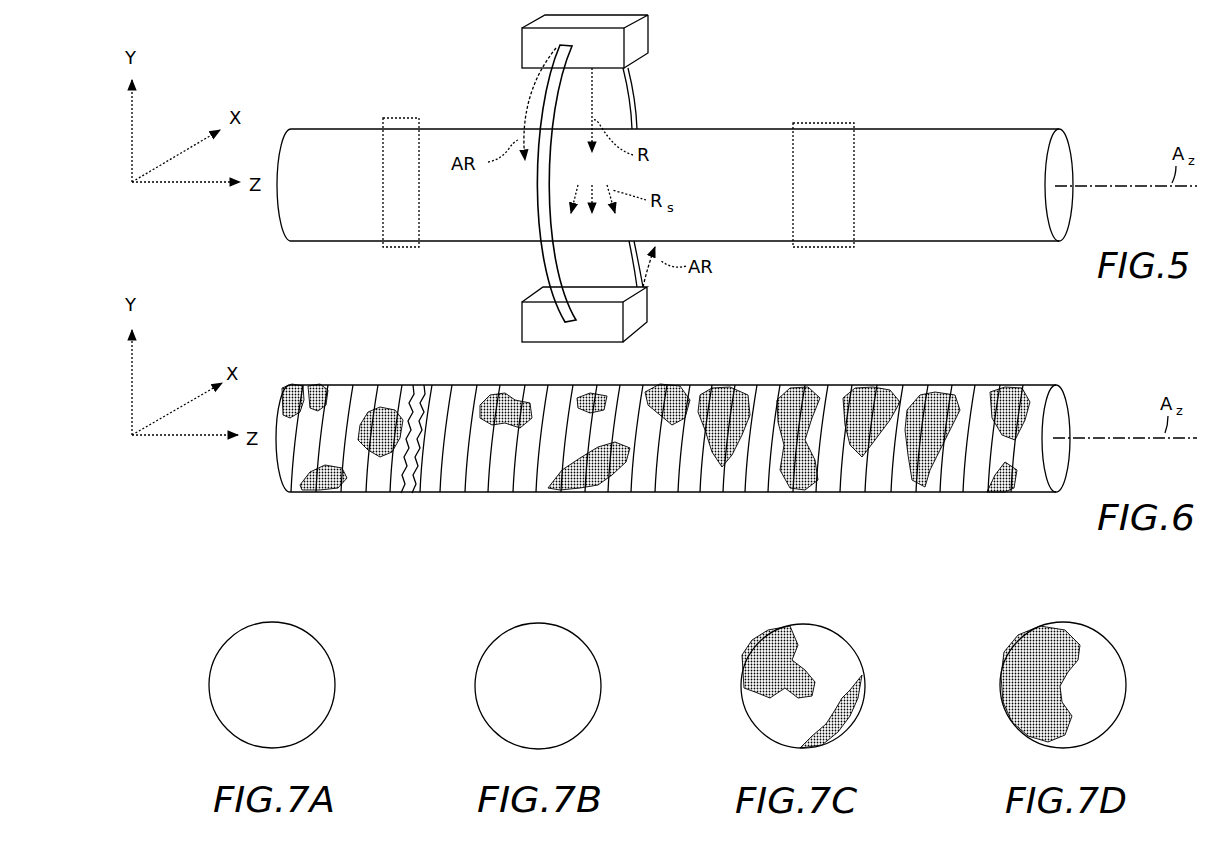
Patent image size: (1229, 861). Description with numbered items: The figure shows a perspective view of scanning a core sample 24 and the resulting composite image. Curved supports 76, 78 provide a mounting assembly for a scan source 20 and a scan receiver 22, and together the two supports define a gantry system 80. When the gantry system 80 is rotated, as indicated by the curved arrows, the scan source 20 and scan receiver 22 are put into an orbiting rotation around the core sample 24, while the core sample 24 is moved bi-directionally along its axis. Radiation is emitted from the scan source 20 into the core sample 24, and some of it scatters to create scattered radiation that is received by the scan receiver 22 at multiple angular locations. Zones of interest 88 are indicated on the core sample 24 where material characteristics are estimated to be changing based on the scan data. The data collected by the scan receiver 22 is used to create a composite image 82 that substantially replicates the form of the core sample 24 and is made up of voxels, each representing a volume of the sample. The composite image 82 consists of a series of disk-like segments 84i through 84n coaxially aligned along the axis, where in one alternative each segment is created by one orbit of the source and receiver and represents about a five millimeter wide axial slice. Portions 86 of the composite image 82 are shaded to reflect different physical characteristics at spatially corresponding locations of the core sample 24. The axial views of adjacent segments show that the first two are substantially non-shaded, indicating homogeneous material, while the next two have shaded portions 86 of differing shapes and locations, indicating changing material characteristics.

In FIG. 5, the scan source 20 is at (637, 33).
In FIG. 5, the scan receiver 22 is at (637, 322).
In FIG. 5, the core sample 24 is at (1022, 140).
In FIG. 5, the curved support 76 is at (540, 254).
In FIG. 5, the curved support 78 is at (636, 88).
In FIG. 5, the gantry system 80 is at (509, 85).
In FIG. 6, the composite image 82 is at (687, 426).
In FIG. 6, the segment 84i is at (303, 383).
In FIG. 7A, the segment 84i is at (322, 648).
In FIG. 6, the segment 84n is at (1047, 383).
In FIG. 6, the portions 86 is at (330, 492).
In FIG. 7C, the portions 86 is at (745, 662).
In FIG. 7D, the portions 86 is at (1014, 655).
In FIG. 5, the zones of interest 88 is at (399, 114).